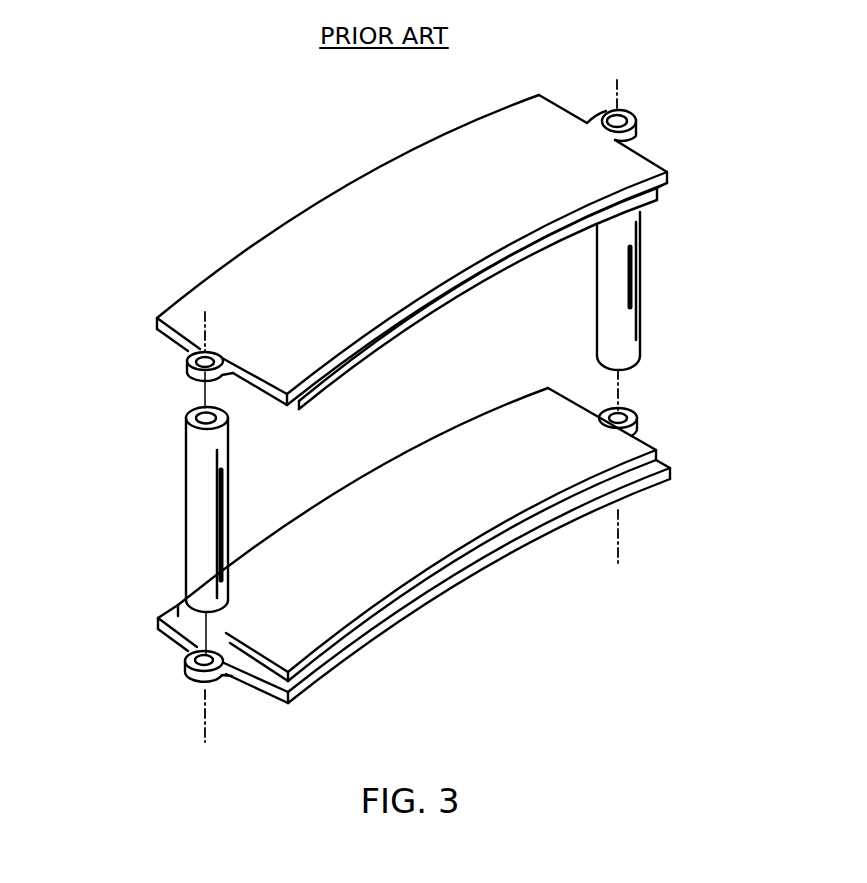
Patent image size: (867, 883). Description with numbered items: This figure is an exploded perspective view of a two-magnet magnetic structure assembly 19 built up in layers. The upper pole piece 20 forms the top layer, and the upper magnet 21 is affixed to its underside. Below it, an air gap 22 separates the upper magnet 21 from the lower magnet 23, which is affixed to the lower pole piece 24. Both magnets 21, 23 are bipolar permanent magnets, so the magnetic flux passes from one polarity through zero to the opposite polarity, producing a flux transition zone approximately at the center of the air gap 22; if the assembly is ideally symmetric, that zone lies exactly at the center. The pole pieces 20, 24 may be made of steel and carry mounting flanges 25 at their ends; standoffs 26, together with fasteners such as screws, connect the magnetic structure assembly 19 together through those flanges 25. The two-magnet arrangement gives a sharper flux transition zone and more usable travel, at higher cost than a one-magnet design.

The magnetic structure assembly 19 is at (316, 168).
The upper pole piece 20 is at (240, 280).
The upper magnet 21 is at (472, 280).
The air gap 22 is at (377, 398).
The lower magnet 23 is at (472, 520).
The lower pole piece 24 is at (435, 588).
The mounting flanges 25 is at (632, 119).
The standoffs 26 is at (618, 287).